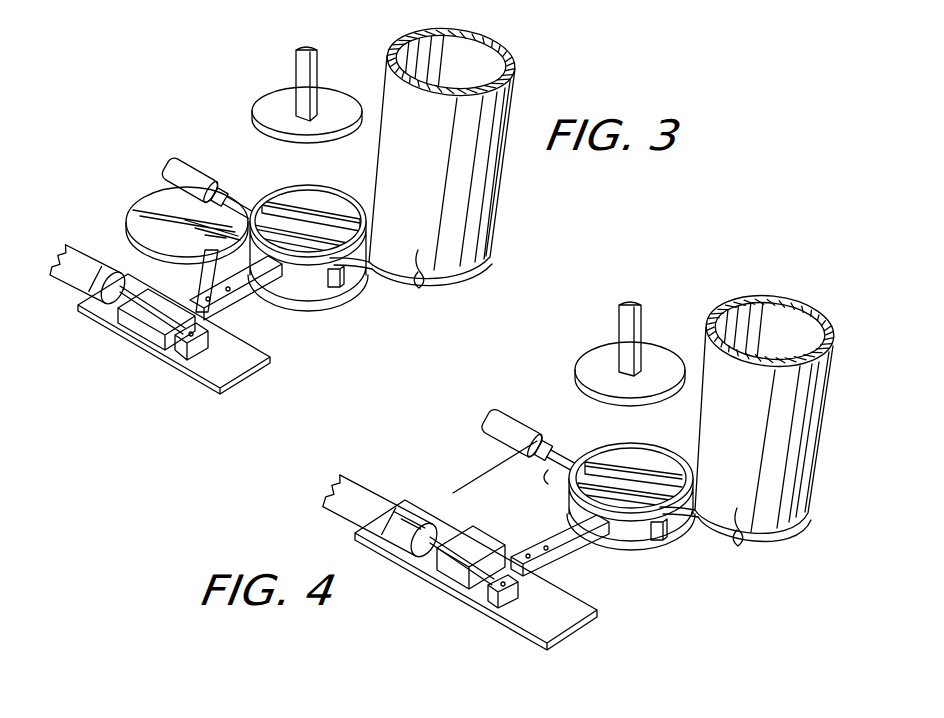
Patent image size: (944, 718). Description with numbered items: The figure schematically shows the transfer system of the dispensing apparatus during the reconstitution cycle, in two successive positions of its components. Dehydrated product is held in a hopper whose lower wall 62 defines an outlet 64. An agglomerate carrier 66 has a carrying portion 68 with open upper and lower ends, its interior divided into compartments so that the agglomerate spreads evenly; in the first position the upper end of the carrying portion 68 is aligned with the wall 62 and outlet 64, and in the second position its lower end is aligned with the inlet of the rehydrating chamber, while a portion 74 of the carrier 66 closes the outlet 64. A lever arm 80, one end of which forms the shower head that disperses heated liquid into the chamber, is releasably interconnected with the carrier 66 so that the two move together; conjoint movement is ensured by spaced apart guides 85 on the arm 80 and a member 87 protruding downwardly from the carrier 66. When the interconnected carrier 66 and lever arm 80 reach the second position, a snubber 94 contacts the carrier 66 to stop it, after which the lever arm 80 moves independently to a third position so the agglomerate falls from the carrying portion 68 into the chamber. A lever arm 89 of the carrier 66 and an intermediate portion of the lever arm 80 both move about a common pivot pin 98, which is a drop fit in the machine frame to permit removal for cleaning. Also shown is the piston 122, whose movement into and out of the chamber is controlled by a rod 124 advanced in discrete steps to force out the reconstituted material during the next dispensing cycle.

In FIG. 3, the lower wall 62 is at (492, 180).
In FIG. 4, the lower wall 62 is at (812, 430).
In FIG. 3, the outlet 64 is at (414, 254).
In FIG. 4, the outlet 64 is at (742, 512).
In FIG. 3, the agglomerate carrier 66 is at (290, 227).
In FIG. 4, the agglomerate carrier 66 is at (604, 493).
In FIG. 3, the carrying portion 68 is at (310, 204).
In FIG. 4, the carrying portion 68 is at (630, 459).
In FIG. 3, the portion 74 is at (399, 279).
In FIG. 4, the portion 74 is at (768, 546).
In FIG. 3, the lever arm 80 is at (139, 197).
In FIG. 3, the guides 85 is at (336, 276).
In FIG. 4, the guides 85 is at (673, 560).
In FIG. 3, the member 87 is at (322, 274).
In FIG. 4, the member 87 is at (615, 568).
In FIG. 3, the lever arm 89 is at (241, 308).
In FIG. 4, the snubber 94 is at (554, 470).
In FIG. 4, the pivot pin 98 is at (530, 555).
In FIG. 3, the piston 122 is at (262, 112).
In FIG. 3, the rod 124 is at (304, 76).